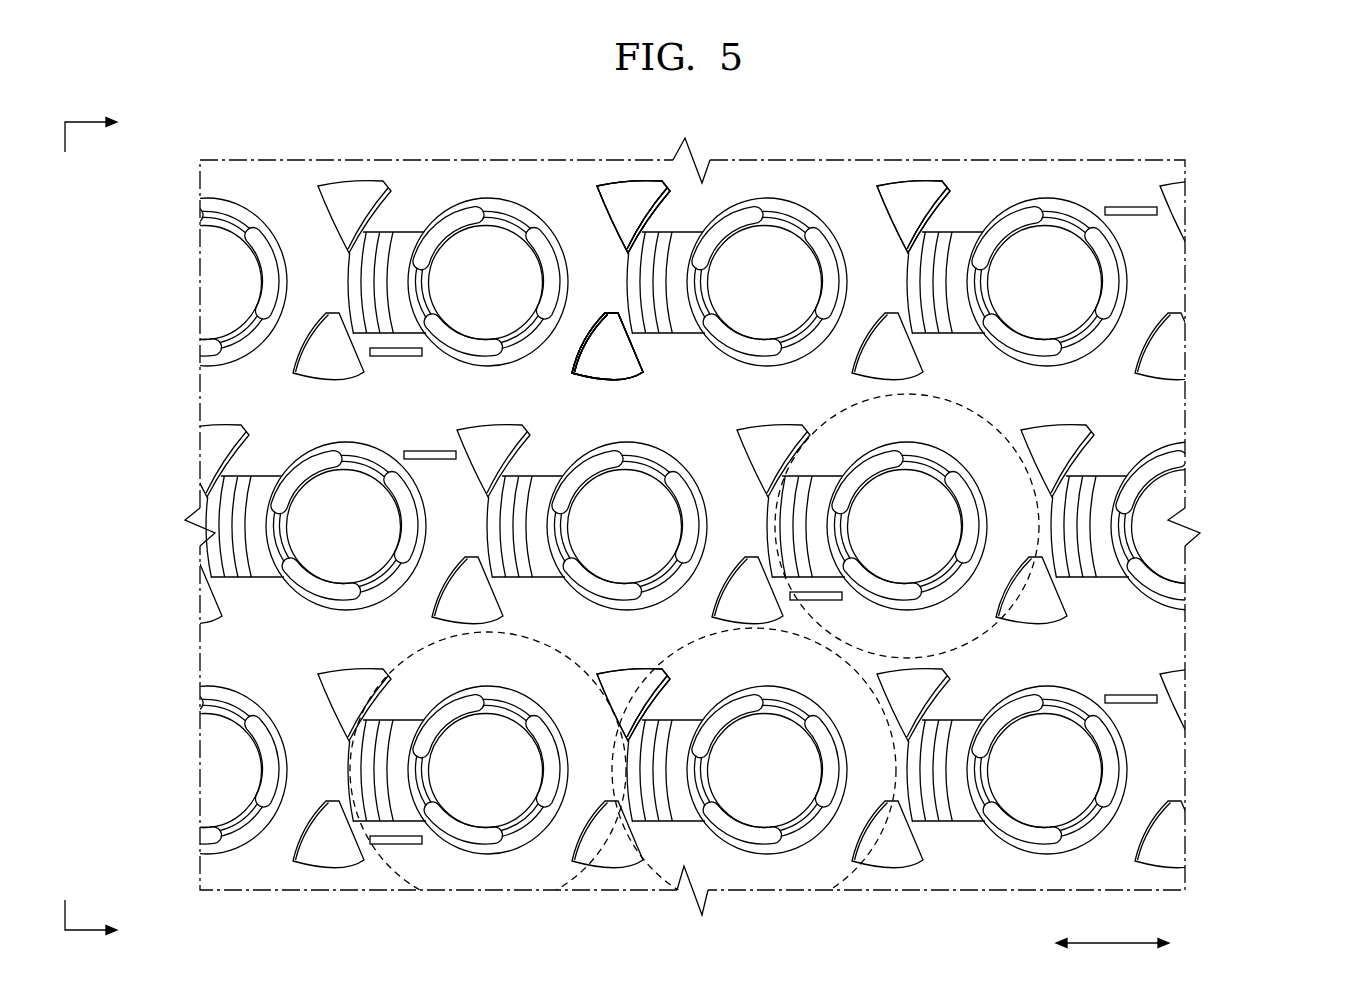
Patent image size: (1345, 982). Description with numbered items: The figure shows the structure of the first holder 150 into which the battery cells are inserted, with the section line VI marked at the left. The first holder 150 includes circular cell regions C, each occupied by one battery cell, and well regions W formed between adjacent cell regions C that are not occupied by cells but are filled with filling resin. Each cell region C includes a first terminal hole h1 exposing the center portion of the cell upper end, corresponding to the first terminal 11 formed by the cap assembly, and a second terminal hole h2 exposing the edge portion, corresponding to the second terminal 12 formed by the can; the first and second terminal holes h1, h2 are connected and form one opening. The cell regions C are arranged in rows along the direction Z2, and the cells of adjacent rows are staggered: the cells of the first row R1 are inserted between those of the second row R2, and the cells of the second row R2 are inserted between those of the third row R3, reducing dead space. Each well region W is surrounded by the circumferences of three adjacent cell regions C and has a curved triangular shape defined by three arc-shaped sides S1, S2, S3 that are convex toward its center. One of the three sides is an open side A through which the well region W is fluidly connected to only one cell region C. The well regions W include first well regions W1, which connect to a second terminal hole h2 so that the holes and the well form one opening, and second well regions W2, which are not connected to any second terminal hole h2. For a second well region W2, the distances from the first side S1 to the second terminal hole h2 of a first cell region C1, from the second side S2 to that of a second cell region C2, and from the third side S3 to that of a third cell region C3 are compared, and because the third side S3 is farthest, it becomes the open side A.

The first holder 150 is at (1128, 187).
The first terminal 11 is at (485, 795).
The second terminal 12 is at (393, 792).
The first terminal hole h1 is at (478, 205).
The second terminal hole h2 is at (405, 232).
The well region W is at (423, 488).
The first well region W1 is at (327, 691).
The second well region W2 is at (133, 688).
The open side A is at (498, 453).
The cell region C is at (953, 623).
The first cell region C1 is at (896, 217).
The second cell region C2 is at (633, 683).
The third cell region C3 is at (614, 217).
The first side S1 is at (622, 346).
The second side S2 is at (607, 362).
The third side S3 is at (601, 346).
The first row R1 is at (1222, 770).
The second row R2 is at (1222, 525).
The third row R3 is at (1222, 283).
The direction Z2 is at (1133, 948).
The section line VI- VI is at (110, 529).